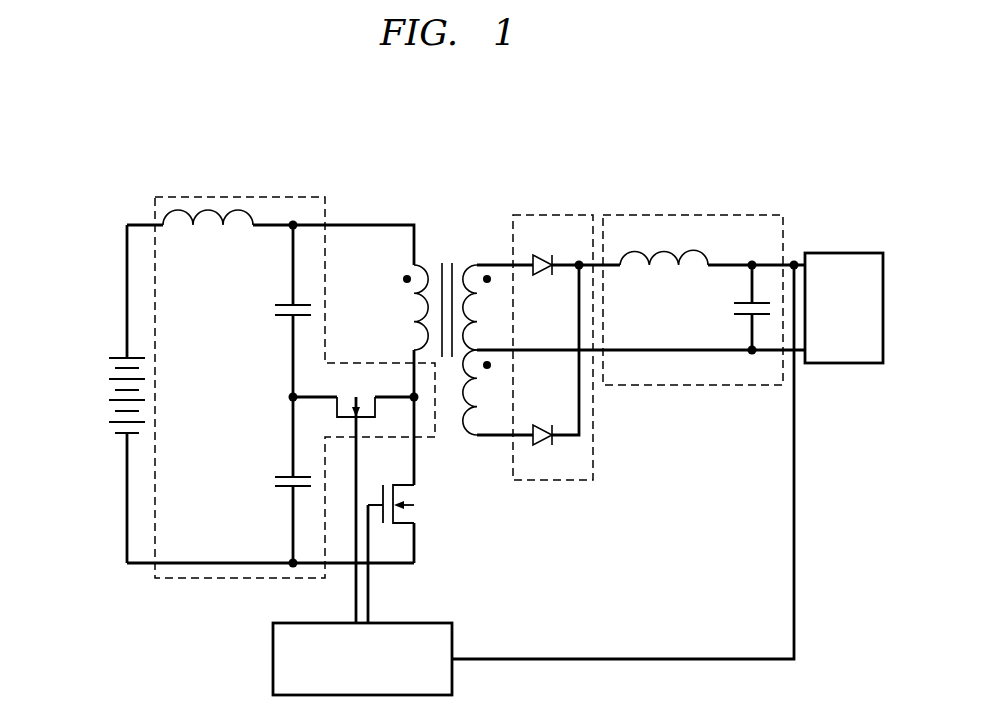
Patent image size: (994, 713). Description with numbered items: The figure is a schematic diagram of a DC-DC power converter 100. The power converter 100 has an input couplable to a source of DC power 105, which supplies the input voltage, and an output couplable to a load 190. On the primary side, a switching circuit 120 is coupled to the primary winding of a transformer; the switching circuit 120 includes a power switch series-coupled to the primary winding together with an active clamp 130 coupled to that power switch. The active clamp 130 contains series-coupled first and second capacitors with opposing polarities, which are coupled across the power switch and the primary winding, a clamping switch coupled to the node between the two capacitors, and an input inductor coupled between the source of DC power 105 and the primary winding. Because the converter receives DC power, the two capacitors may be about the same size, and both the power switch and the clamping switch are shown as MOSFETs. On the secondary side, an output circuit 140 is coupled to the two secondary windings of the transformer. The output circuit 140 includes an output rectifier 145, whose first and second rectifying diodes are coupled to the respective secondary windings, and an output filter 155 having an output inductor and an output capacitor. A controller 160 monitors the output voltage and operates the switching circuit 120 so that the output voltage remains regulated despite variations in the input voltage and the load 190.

The DC-DC power converter 100 is at (205, 93).
The source of DC power 105 is at (85, 460).
The switching circuit 120 is at (413, 183).
The active clamp 130 is at (154, 202).
The output circuit 140 is at (783, 183).
The output rectifier 145 is at (557, 480).
The output filter 155 is at (695, 385).
The controller 160 is at (273, 660).
The load 190 is at (842, 253).